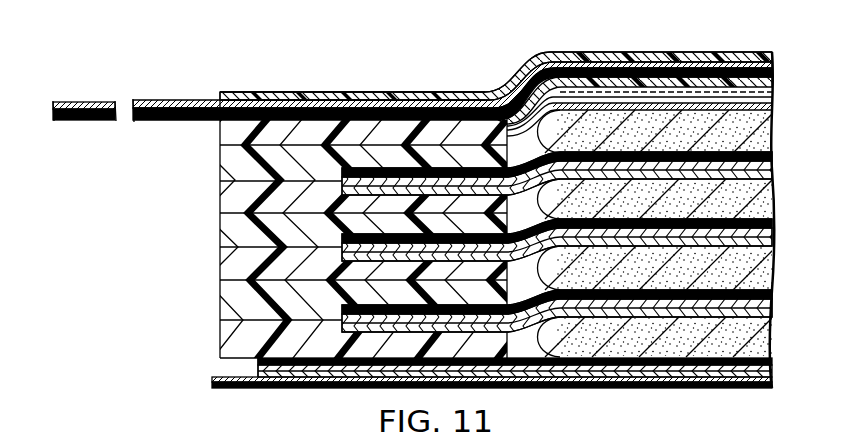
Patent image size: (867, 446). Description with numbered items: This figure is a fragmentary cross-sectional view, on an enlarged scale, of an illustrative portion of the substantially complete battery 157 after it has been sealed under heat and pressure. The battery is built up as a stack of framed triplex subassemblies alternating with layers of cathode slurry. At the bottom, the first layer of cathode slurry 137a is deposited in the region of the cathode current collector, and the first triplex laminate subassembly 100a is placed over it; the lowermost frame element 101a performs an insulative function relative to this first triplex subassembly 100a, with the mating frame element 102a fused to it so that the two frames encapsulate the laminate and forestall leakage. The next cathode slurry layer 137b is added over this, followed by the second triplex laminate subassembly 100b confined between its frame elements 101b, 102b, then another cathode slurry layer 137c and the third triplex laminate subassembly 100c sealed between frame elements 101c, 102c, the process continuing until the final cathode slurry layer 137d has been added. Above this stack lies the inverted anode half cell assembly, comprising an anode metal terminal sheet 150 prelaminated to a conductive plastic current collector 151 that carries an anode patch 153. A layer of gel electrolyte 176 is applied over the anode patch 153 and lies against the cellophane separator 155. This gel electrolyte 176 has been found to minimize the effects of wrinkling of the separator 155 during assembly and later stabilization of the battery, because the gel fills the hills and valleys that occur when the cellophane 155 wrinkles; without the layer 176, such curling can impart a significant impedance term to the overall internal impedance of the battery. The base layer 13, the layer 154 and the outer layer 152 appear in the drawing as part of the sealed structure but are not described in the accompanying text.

The battery 157 is at (458, 82).
The top insulating layer 154 is at (237, 135).
The frame element 102c is at (240, 167).
The frame element 101c is at (237, 200).
The frame element 102b is at (240, 232).
The frame element 101b is at (237, 266).
The frame element 102a is at (240, 303).
The frame element 101a is at (237, 341).
The triplex laminate subassembly 100c is at (336, 192).
The triplex laminate subassembly 100b is at (336, 263).
The triplex laminate subassembly 100a is at (336, 329).
The base substrate 13 is at (247, 389).
The outer surface layer 152 is at (772, 51).
The anode metal terminal sheet 150 is at (772, 58).
The conductive plastic current collector 151 is at (772, 71).
The anode patch 153 is at (772, 85).
The gel electrolyte 176 is at (772, 99).
The separator 155 is at (772, 108).
The cathode slurry layer 137d is at (756, 142).
The cathode slurry layer 137c is at (756, 201).
The cathode slurry layer 137b is at (756, 270).
The cathode slurry layer 137a is at (756, 340).